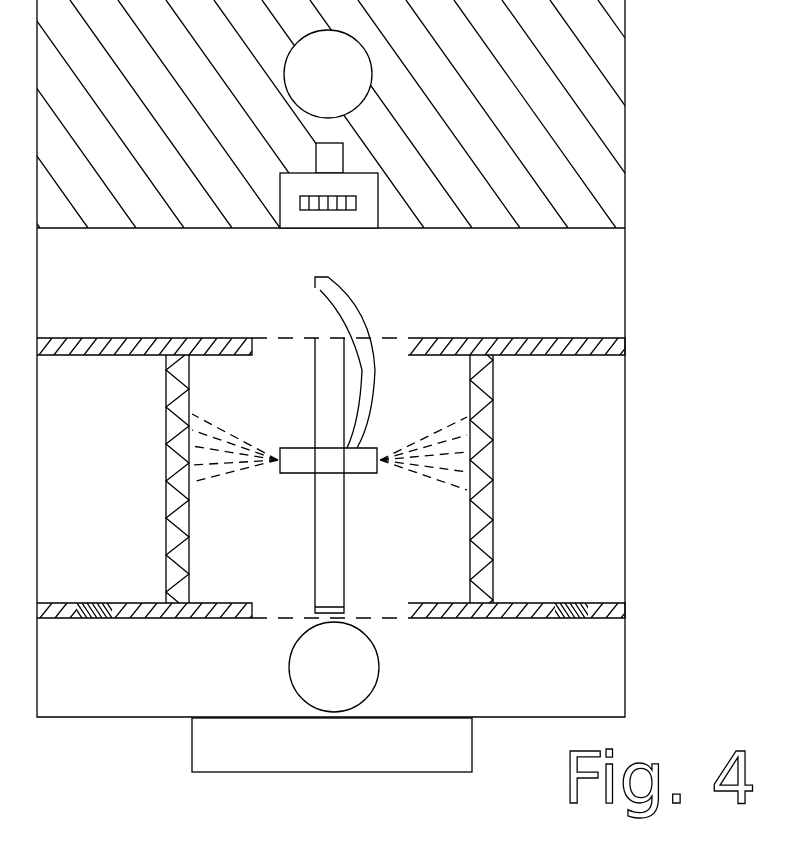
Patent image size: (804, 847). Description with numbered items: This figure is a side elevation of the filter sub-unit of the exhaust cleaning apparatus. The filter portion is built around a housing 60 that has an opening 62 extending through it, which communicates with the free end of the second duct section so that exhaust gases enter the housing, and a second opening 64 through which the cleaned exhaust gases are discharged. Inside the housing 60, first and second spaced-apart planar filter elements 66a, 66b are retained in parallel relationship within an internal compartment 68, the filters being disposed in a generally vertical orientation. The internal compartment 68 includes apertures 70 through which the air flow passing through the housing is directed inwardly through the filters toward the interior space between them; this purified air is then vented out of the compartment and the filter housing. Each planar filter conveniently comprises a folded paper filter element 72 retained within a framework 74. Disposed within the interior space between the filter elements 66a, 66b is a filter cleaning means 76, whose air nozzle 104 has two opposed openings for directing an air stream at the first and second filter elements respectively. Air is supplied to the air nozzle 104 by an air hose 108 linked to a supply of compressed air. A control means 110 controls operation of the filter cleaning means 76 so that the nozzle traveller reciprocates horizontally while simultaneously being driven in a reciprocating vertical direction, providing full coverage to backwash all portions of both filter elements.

The housing 60 is at (627, 292).
The opening 62 is at (300, 678).
The second opening 64 is at (357, 75).
The first planar filter element 66a is at (166, 522).
The second planar filter element 66b is at (494, 524).
The internal compartment 68 is at (120, 403).
The apertures 70 is at (385, 337).
The folded paper filter element 72 is at (163, 428).
The framework 74 is at (166, 470).
The filter cleaning means 76 is at (287, 475).
The air nozzle 104 is at (272, 455).
The air hose 108 is at (314, 283).
The control means 110 is at (380, 773).